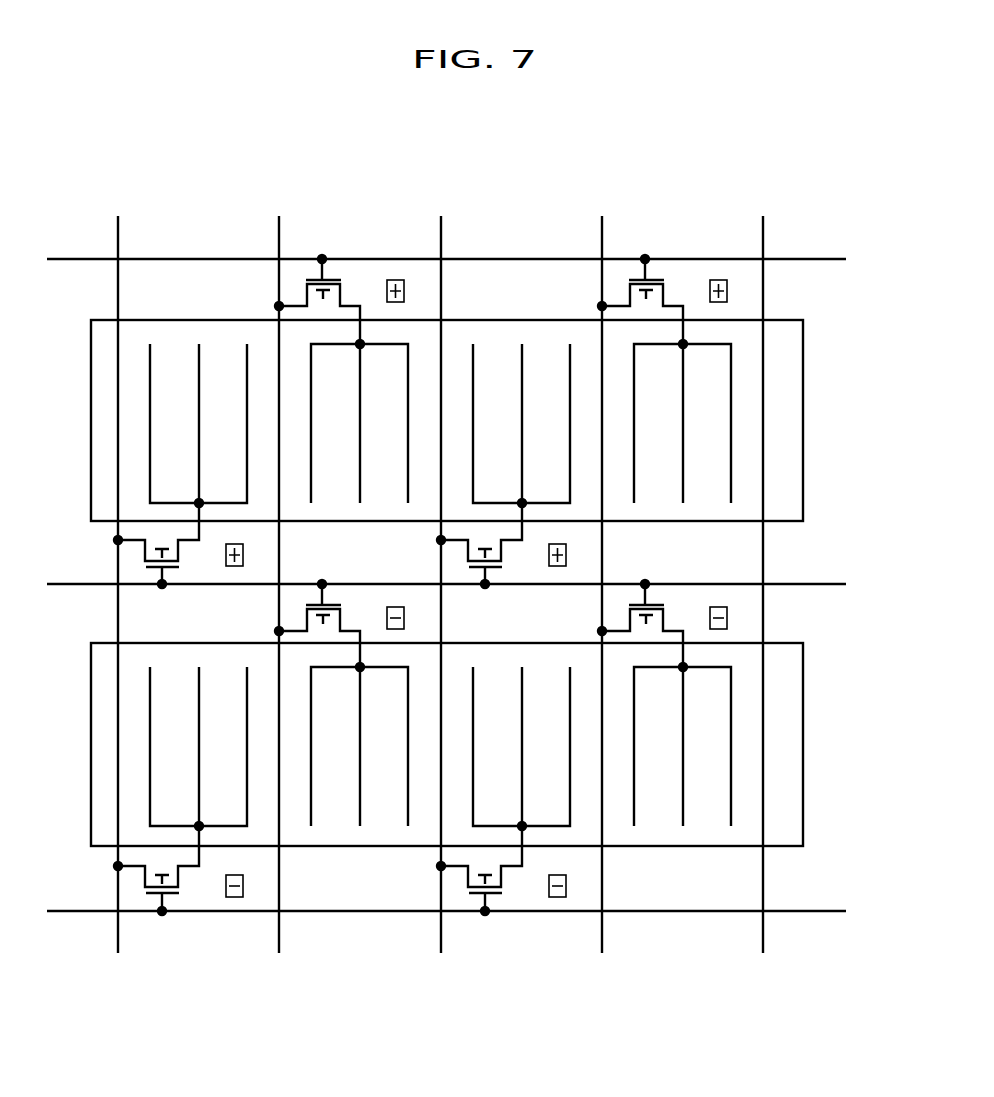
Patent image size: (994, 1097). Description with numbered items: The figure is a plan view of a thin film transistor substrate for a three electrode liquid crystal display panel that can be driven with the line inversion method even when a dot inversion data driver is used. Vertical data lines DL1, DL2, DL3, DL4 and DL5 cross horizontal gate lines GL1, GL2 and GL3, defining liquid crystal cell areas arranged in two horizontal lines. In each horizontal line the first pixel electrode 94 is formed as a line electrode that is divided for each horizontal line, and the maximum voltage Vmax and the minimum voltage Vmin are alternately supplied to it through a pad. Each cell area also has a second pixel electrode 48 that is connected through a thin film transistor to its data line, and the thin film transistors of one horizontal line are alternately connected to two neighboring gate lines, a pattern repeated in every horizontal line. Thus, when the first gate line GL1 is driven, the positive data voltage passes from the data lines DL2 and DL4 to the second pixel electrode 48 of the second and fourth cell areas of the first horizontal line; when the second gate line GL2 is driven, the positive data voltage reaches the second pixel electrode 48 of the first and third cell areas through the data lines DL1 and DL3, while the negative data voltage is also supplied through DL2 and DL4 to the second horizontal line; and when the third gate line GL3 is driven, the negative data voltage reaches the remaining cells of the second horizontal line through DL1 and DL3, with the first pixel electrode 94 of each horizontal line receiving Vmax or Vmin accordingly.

The second pixel electrode 48 is at (198, 386).
The first pixel electrode 94 is at (803, 383).
The data line DL1 is at (118, 221).
The data line DL2 is at (279, 221).
The data line DL3 is at (441, 221).
The data line DL4 is at (602, 221).
The data line DL5 is at (763, 221).
The first gate line GL1 is at (846, 259).
The second gate line GL2 is at (846, 584).
The third gate line GL3 is at (846, 911).